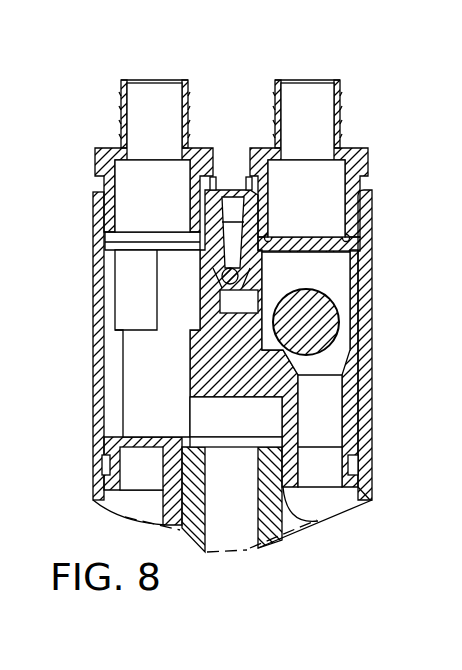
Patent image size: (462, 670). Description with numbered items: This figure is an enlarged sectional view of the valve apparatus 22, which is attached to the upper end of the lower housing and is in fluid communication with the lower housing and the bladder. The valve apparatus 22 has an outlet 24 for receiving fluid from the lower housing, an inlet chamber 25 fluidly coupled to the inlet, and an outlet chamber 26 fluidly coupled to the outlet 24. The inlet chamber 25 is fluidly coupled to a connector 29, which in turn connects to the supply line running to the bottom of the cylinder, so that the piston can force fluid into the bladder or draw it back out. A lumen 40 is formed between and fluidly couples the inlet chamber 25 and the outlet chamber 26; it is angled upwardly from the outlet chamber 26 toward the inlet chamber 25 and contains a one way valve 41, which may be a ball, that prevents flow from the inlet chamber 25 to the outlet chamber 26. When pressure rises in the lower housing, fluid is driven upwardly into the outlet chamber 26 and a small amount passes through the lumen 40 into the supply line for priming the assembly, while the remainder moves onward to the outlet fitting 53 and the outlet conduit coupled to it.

The valve apparatus 22 is at (403, 186).
The outlet 24 is at (318, 487).
The inlet chamber 25 is at (132, 310).
The outlet chamber 26 is at (333, 274).
The connector 29 is at (123, 108).
The lumen 40 is at (245, 300).
The one way valve 41 is at (233, 265).
The outlet fitting 53 is at (342, 115).